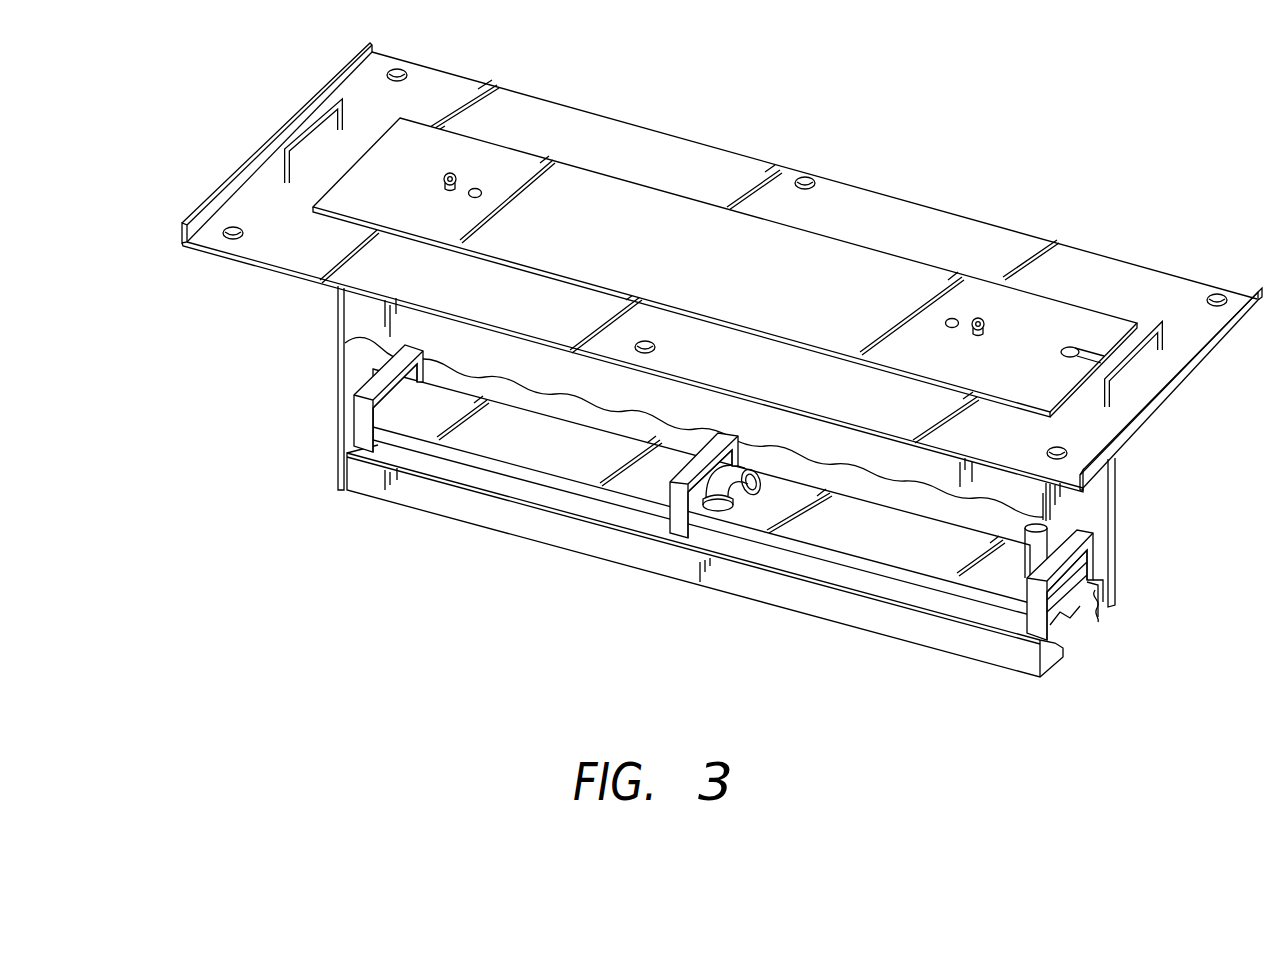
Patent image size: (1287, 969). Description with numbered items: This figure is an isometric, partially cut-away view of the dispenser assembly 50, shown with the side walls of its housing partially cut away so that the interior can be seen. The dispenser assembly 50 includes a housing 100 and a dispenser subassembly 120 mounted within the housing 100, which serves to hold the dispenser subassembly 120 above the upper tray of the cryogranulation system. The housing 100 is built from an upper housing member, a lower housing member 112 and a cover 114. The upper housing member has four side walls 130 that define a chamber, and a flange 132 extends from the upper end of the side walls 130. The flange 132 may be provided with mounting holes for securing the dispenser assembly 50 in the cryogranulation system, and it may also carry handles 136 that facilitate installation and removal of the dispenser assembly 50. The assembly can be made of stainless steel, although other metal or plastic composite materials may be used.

The dispenser assembly 50 is at (230, 86).
The housing 100 is at (338, 333).
The lower housing member 112 is at (588, 553).
The cover 114 is at (610, 177).
The dispenser subassembly 120 is at (507, 460).
The side walls 130 is at (352, 418).
The flange 132 is at (863, 185).
The handles 136 is at (290, 156).